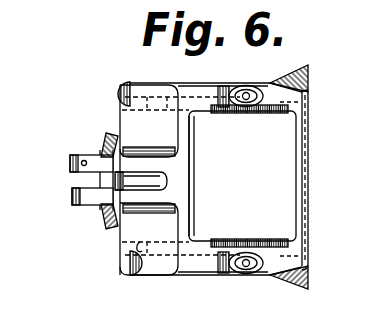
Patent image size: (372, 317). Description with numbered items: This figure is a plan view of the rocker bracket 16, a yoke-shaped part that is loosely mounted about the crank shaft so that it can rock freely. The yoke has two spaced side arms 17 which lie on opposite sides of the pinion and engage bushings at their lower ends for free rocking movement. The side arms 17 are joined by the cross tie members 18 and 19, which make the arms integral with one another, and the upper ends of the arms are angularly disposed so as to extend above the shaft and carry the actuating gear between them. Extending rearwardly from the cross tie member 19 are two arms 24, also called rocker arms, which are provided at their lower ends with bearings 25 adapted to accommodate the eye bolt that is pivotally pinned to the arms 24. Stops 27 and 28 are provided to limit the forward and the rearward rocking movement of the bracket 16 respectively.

The rocker bracket 16 is at (262, 181).
The side arms 17 is at (222, 85).
The cross tie member 18 is at (308, 143).
The cross tie member 19 is at (189, 139).
The arms 24 is at (128, 198).
The bearings 25 is at (70, 162).
The stop 27 is at (308, 67).
The stop 28 is at (101, 141).